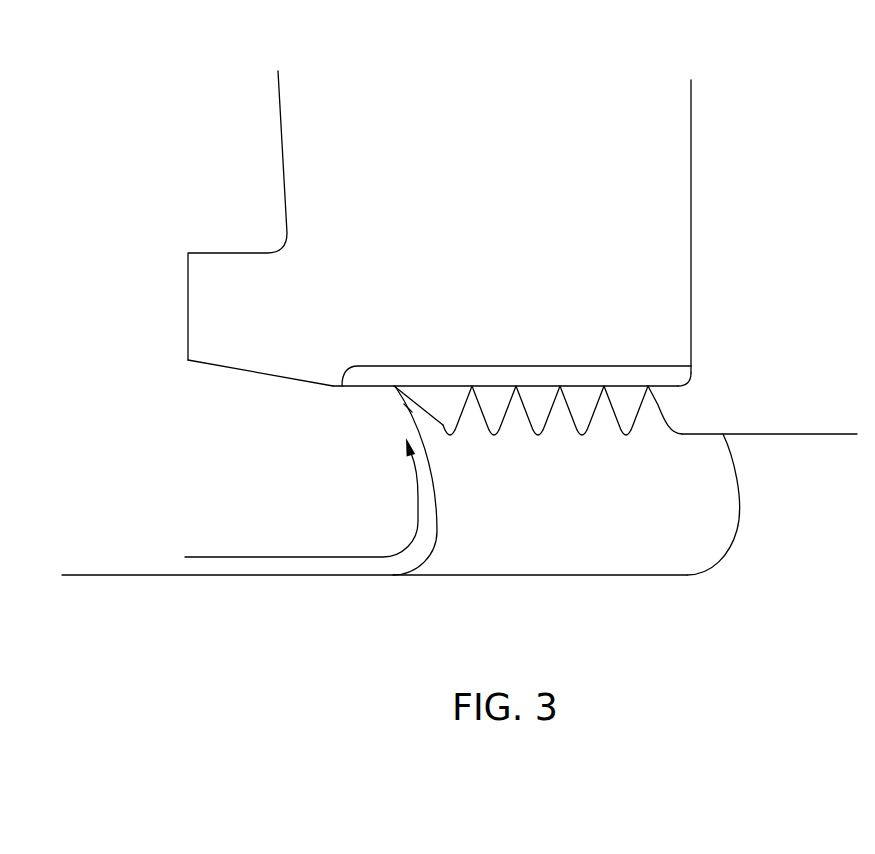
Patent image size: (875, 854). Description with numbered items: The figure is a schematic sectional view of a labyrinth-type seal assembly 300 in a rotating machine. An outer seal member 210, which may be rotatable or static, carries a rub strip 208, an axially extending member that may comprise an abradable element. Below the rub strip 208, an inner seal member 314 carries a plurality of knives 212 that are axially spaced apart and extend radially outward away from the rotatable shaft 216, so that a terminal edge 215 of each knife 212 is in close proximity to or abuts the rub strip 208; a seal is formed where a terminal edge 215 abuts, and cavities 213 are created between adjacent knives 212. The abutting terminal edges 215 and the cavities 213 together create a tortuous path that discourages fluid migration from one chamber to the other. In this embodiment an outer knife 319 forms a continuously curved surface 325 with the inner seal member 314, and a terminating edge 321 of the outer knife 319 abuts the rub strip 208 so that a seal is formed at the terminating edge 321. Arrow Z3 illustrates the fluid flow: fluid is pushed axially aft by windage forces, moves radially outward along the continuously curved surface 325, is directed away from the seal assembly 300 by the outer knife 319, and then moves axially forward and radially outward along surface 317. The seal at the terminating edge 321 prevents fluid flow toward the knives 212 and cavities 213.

The outer seal member 210 is at (456, 192).
The rub strip 208 is at (577, 371).
The terminal edge 215 is at (653, 389).
The knives 212 is at (650, 422).
The cavities 213 is at (625, 410).
The rotatable shaft 216 is at (803, 582).
The inner seal member 314 is at (561, 553).
The surface 317 is at (277, 377).
The outer knife 319 is at (408, 408).
The terminating edge 321 is at (393, 372).
The continuously curved surface 325 is at (437, 490).
The arrow Z3 is at (283, 557).
The seal assembly 300 is at (769, 330).